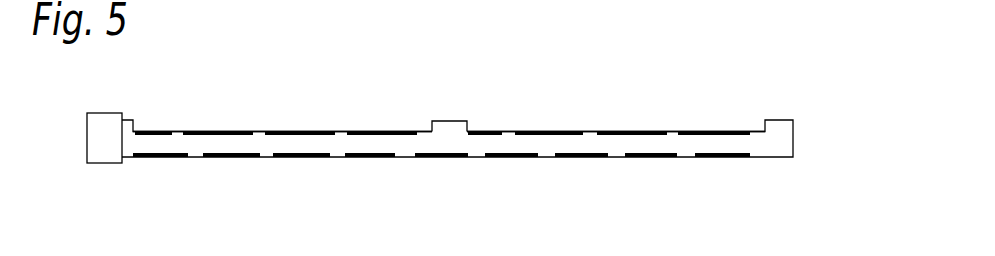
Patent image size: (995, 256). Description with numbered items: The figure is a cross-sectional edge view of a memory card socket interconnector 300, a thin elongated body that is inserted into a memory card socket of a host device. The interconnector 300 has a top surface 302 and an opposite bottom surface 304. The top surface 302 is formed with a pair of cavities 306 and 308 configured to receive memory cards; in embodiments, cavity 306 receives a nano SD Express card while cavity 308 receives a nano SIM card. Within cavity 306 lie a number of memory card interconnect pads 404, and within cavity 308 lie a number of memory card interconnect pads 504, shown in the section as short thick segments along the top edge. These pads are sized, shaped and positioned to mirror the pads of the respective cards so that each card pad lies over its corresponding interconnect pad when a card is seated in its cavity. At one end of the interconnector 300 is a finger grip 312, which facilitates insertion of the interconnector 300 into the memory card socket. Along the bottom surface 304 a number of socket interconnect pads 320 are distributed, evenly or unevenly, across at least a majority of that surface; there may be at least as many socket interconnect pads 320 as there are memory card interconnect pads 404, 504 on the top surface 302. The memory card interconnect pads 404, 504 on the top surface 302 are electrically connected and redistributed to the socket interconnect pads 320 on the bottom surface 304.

The memory card socket interconnector 300 is at (821, 75).
The top surface 302 is at (453, 121).
The bottom surface 304 is at (475, 157).
The cavity 306 is at (343, 132).
The cavity 308 is at (673, 132).
The finger grip 312 is at (107, 113).
The socket interconnect pads 320 is at (235, 157).
The memory card interconnect pads 404 is at (213, 132).
The memory card interconnect pads 504 is at (555, 132).